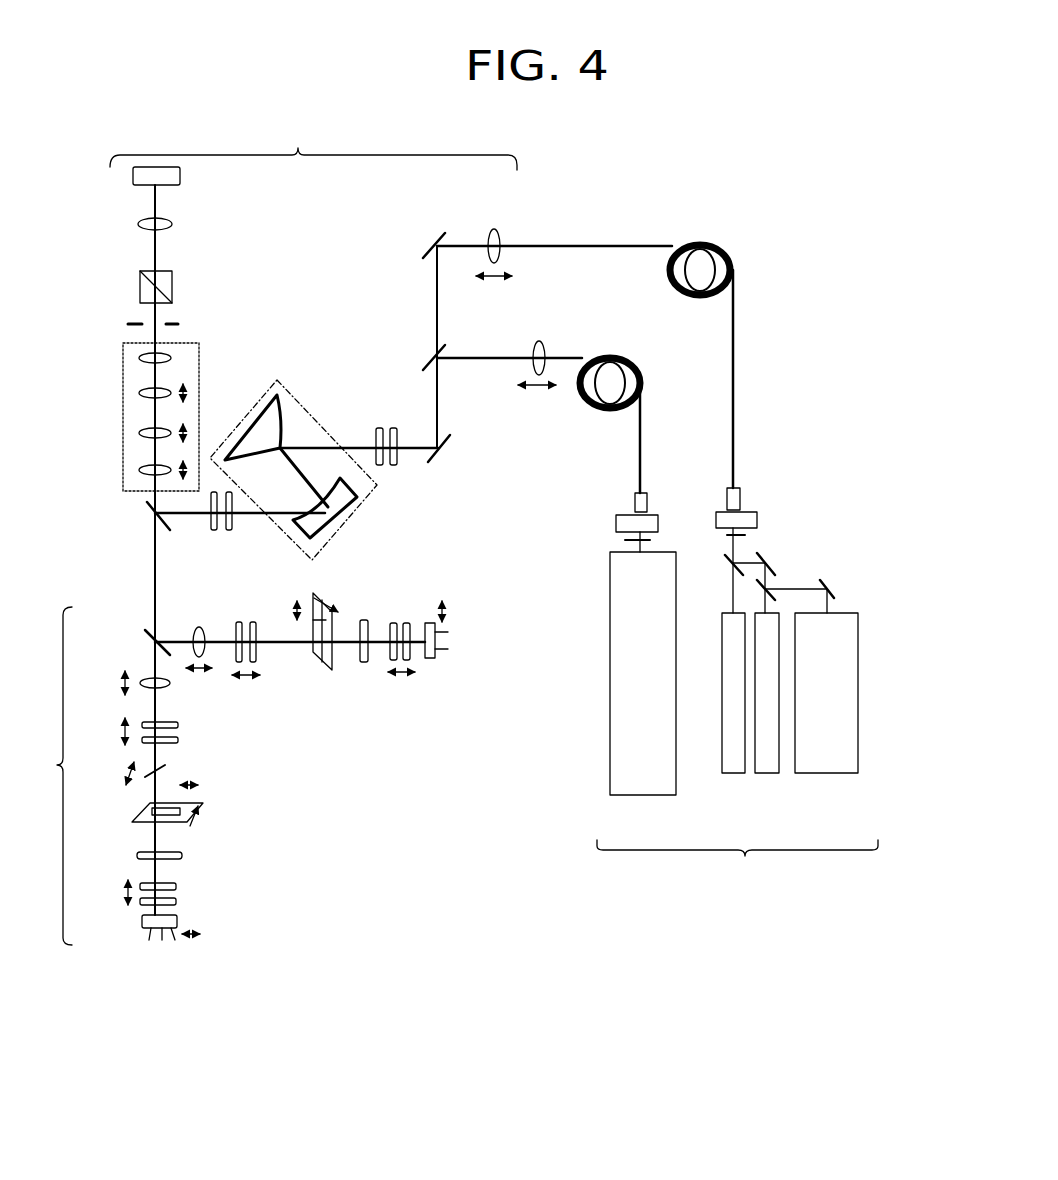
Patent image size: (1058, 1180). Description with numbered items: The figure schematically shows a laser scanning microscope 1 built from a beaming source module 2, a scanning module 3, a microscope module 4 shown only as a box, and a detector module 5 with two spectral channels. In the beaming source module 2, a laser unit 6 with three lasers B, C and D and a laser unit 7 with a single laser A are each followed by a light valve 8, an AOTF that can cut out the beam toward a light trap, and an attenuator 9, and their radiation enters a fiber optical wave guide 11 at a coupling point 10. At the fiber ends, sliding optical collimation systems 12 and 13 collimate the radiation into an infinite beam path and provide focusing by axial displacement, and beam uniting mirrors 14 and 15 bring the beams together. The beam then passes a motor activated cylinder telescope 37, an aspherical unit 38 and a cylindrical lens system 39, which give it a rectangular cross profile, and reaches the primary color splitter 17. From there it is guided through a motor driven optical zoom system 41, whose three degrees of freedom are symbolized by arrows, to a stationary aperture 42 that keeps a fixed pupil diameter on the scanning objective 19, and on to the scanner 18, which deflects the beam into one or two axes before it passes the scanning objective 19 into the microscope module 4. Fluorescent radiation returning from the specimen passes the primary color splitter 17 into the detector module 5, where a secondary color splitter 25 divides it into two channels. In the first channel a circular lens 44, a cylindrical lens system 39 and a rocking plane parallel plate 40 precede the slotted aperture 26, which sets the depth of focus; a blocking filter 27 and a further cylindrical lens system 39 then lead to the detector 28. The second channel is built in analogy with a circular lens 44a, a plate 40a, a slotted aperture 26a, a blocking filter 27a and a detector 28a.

The laser scanning microscope 1 is at (468, 920).
The beaming source module 2 is at (737, 872).
The scanning module 3 is at (313, 140).
The microscope module 4 is at (133, 178).
The detector module 5 is at (45, 776).
The laser unit 6 is at (862, 790).
The laser unit 7 is at (610, 772).
The light valve 8 is at (745, 535).
The attenuator 9 is at (757, 520).
The coupling point 10 is at (742, 495).
The fiber optical wave guide 11 is at (735, 420).
The optical collimation system 12 is at (500, 230).
The optical collimation system 13 is at (545, 340).
The beam uniting mirror 14 is at (436, 240).
The beam uniting mirror 15 is at (432, 356).
The primary color splitter 17 is at (143, 508).
The scanner 18 is at (140, 285).
The scanning objective 19 is at (172, 222).
The secondary color splitter 25 is at (143, 636).
The slotted aperture 26 is at (325, 672).
The slotted aperture 26a is at (203, 808).
The blocking filter 27 is at (364, 662).
The blocking filter 27a is at (182, 855).
The detector 28 is at (436, 660).
The detector 28a is at (147, 930).
The cylinder telescope 37 is at (400, 415).
The aspherical unit 38 is at (360, 503).
The cylindrical lens system 39 is at (207, 537).
The plane parallel plate 40 is at (283, 656).
The plane parallel plate 40a is at (163, 767).
The optical zoom system 41 is at (123, 440).
The stationary aperture 42 is at (170, 322).
The circular lens 44 is at (197, 626).
The circular lens 44a is at (172, 685).